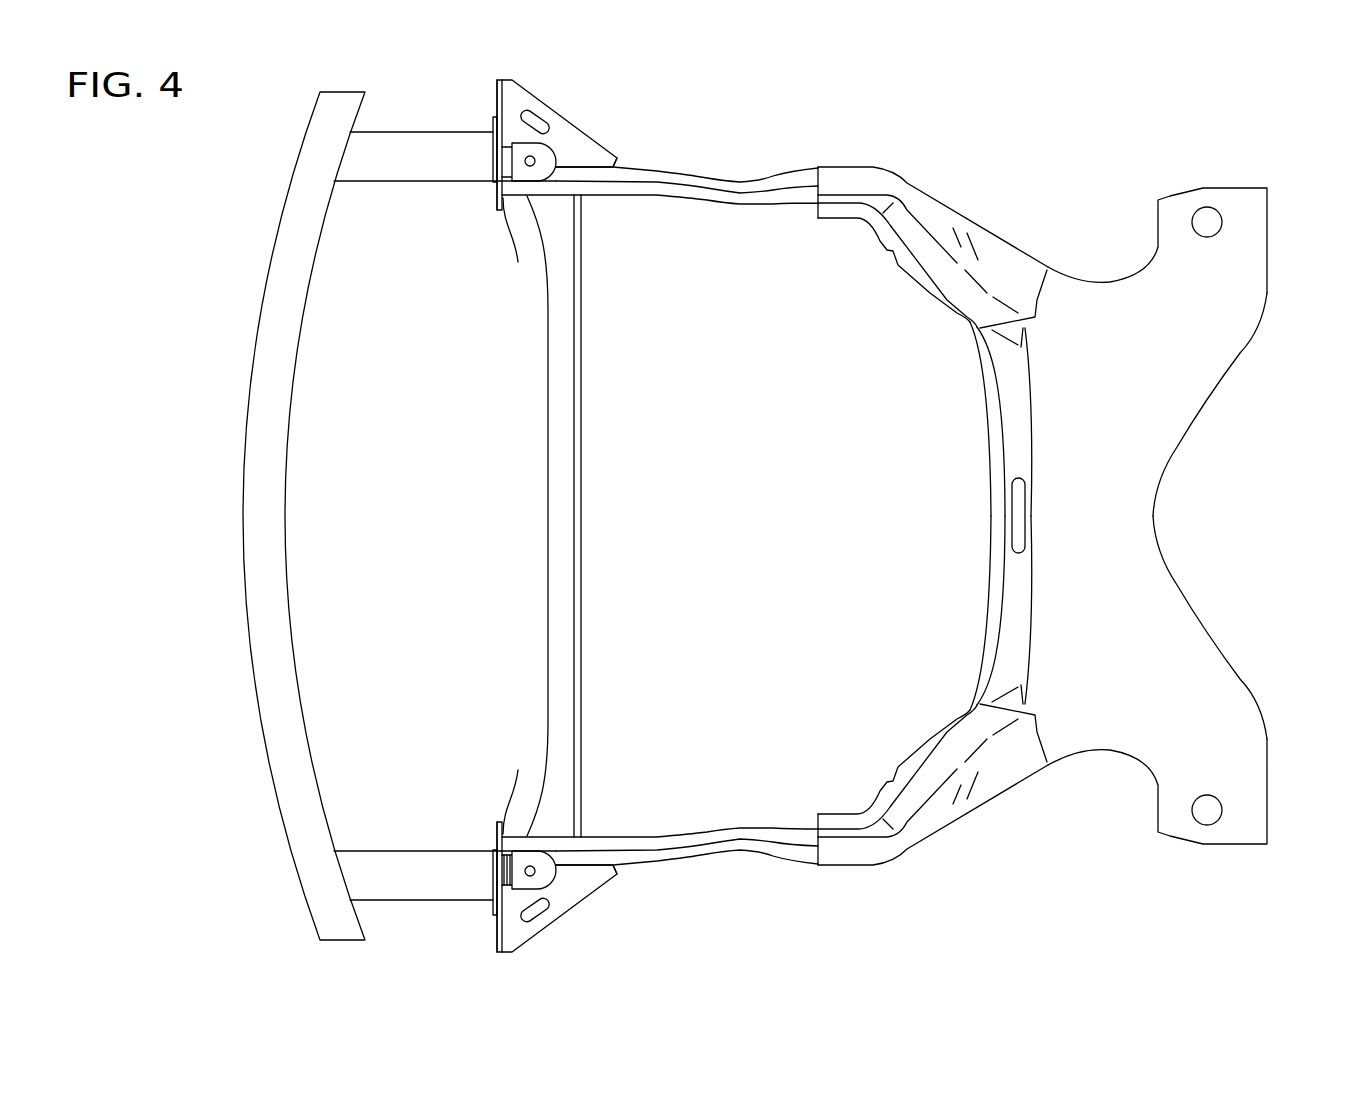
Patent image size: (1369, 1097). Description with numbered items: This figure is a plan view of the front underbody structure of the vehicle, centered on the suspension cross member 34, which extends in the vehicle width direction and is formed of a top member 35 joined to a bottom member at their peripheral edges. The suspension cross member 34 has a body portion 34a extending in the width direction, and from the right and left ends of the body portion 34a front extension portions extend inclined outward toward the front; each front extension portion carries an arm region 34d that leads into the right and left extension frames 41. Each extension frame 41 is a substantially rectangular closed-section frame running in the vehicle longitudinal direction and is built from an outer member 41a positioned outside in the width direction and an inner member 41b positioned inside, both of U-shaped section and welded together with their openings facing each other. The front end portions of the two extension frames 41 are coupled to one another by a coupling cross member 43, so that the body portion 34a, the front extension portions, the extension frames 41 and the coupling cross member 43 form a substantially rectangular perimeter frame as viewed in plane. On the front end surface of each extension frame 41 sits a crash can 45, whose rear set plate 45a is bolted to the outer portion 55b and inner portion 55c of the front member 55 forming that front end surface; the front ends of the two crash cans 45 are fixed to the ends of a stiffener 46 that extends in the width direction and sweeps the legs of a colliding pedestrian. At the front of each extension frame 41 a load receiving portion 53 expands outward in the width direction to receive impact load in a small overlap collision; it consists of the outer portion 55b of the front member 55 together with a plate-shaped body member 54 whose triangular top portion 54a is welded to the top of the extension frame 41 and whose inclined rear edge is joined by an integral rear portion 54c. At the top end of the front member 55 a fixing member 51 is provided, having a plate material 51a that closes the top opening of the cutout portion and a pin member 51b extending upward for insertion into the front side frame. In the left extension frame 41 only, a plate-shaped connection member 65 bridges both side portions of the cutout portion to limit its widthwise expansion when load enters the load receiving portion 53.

The suspension cross member 34 is at (1191, 516).
The body portion 34a is at (1130, 476).
The arm portion 34d is at (930, 212).
The top member 35 is at (1195, 656).
The extension frame 41 is at (675, 515).
The outer member 41a is at (738, 184).
The inner member 41b is at (803, 188).
The coupling cross member 43 is at (548, 490).
The crash can 45 is at (445, 516).
The set plate 45a is at (492, 190).
The stiffener 46 is at (240, 487).
The fixing member 51 is at (620, 516).
The plate material 51a is at (536, 165).
The pin member 51b is at (543, 174).
The load receiving portion 53 is at (600, 517).
The body member 54 is at (600, 514).
The top portion 54a is at (557, 130).
The rear portion 54c is at (588, 133).
The front member 55 is at (466, 516).
The outer portion 55b is at (493, 94).
The inner portion 55c is at (518, 252).
The connection member 65 is at (500, 870).